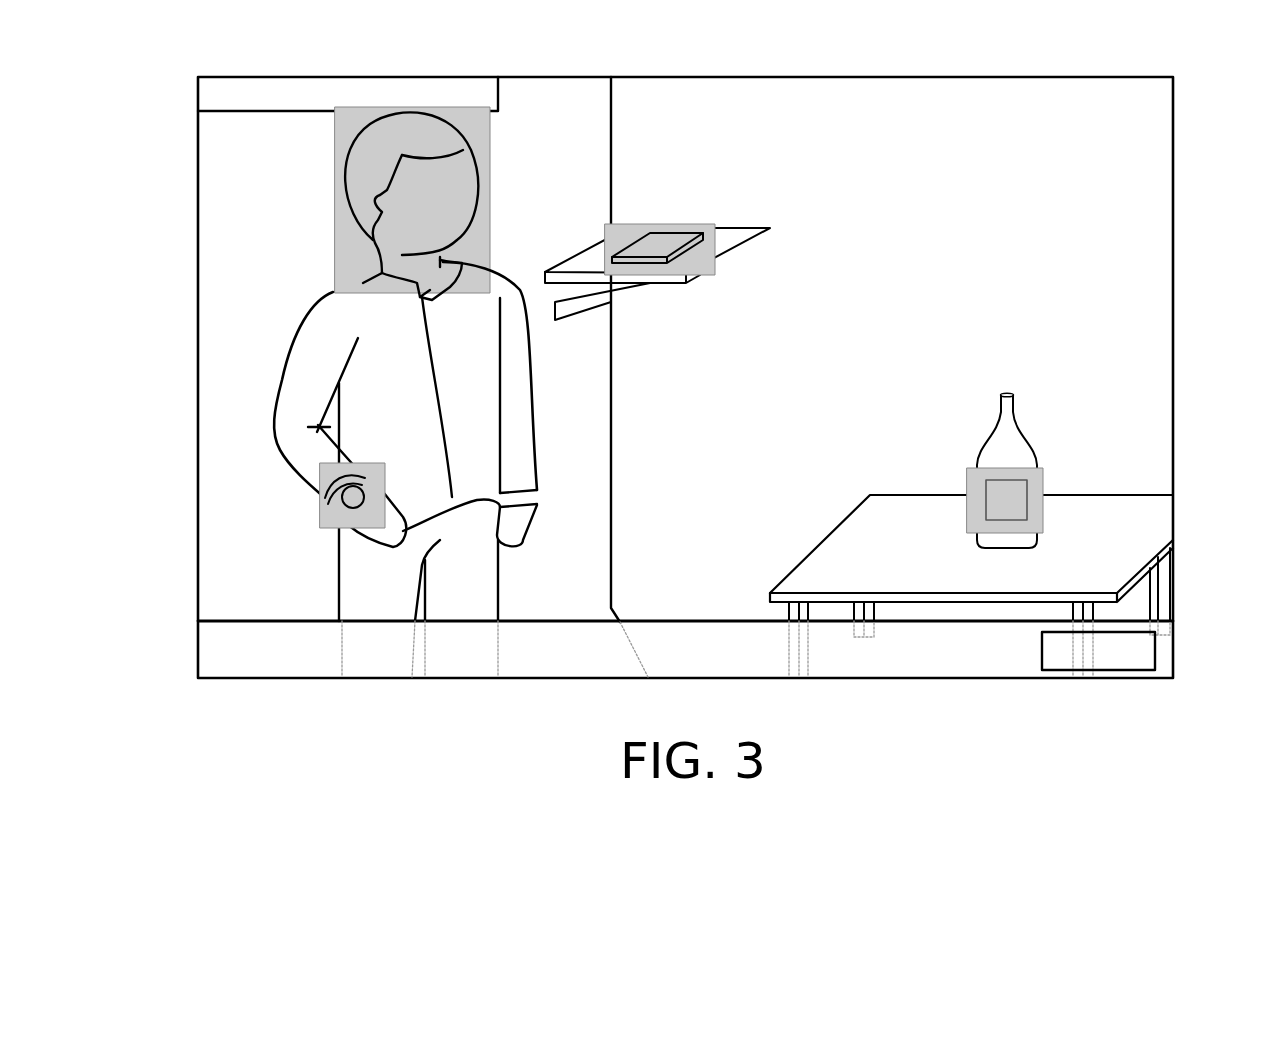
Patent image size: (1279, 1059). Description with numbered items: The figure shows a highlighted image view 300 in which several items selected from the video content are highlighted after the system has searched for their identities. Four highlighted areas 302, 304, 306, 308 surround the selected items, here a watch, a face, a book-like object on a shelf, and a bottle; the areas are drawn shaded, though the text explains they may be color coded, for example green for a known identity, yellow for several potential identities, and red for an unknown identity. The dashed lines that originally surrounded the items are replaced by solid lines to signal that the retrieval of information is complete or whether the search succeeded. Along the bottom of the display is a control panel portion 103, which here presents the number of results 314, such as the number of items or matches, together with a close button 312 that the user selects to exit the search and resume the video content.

The augmented reality display environment 300 is at (152, 113).
The control panel portion 103 is at (197, 660).
The highlighted area 302 is at (330, 517).
The highlighted area 304 is at (350, 257).
The highlighted area 306 is at (700, 260).
The highlighted area 308 is at (982, 487).
The close button 312 is at (1157, 650).
The number of results 314 is at (972, 662).